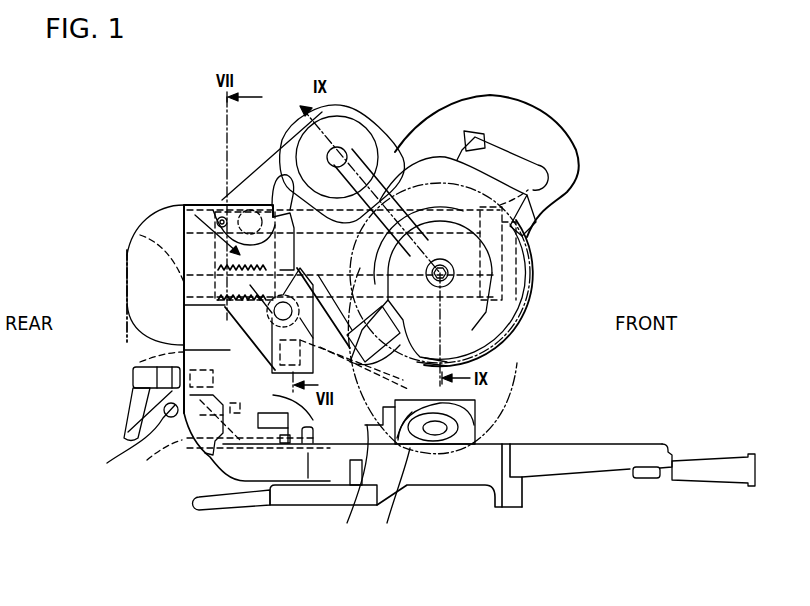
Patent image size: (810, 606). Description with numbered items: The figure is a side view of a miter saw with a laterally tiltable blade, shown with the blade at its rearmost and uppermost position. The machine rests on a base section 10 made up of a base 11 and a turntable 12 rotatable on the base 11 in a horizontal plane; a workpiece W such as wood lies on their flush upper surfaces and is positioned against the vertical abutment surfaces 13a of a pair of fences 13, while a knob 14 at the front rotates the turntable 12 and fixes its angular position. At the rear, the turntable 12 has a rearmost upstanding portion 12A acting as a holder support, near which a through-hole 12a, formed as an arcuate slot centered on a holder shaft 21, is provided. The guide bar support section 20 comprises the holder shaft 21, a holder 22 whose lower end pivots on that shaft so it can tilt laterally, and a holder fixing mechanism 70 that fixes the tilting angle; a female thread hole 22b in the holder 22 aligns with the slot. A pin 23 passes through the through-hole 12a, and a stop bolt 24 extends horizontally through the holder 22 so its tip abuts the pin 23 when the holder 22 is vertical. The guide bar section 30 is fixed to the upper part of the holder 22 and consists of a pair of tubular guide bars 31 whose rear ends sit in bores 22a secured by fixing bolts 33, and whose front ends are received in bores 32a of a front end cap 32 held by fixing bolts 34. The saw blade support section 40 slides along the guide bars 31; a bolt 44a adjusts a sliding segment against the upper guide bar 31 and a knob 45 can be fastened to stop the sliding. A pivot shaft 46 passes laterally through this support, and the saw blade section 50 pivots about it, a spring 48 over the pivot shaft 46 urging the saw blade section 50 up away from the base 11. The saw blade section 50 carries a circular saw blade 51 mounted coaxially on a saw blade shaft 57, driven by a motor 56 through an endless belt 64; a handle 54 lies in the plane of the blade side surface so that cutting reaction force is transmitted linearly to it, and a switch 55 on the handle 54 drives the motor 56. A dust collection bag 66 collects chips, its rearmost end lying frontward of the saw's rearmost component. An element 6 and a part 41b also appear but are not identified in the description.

The lever 6 is at (126, 400).
The base section 10 is at (543, 557).
The base 11 is at (485, 485).
The turntable 12 is at (560, 455).
The rearmost upstanding portion 12A is at (128, 430).
The through-hole 12a is at (147, 460).
The fences 13 is at (347, 523).
The vertical abutment surfaces 13a is at (387, 523).
The knob 14 is at (705, 462).
The guide bar support section 20 is at (318, 418).
The holder shaft 21 is at (258, 453).
The holder 22 is at (184, 343).
The bores 22a is at (184, 210).
The female thread hole 22b is at (140, 362).
The pin 23 is at (107, 463).
The stop bolt 24 is at (197, 450).
The guide bar section 30 is at (195, 205).
The guide bars 31 is at (184, 290).
The front end cap 32 is at (515, 248).
The bores 32a is at (528, 190).
The fixing bolts 33 is at (140, 235).
The fixing bolts 34 is at (520, 222).
The saw blade support section 40 is at (220, 210).
The cam 41b is at (236, 207).
The bolt 44a is at (205, 205).
The knob 45 is at (220, 215).
The pivot shaft 46 is at (268, 185).
The spring 48 is at (272, 320).
The saw blade section 50 is at (398, 122).
The circular saw blade 51 is at (480, 338).
The handle 54 is at (520, 125).
The switch 55 is at (480, 140).
The motor 56 is at (348, 135).
The saw blade shaft 57 is at (455, 268).
The endless belt 64 is at (405, 155).
The dust collection bag 66 is at (127, 255).
The holder fixing mechanism 70 is at (100, 392).
The workpiece W is at (470, 425).